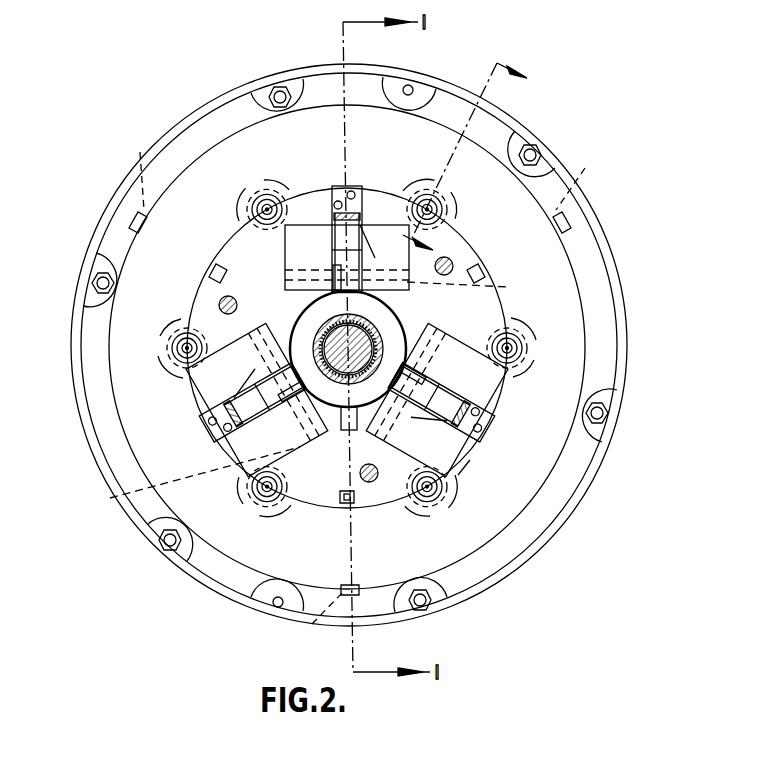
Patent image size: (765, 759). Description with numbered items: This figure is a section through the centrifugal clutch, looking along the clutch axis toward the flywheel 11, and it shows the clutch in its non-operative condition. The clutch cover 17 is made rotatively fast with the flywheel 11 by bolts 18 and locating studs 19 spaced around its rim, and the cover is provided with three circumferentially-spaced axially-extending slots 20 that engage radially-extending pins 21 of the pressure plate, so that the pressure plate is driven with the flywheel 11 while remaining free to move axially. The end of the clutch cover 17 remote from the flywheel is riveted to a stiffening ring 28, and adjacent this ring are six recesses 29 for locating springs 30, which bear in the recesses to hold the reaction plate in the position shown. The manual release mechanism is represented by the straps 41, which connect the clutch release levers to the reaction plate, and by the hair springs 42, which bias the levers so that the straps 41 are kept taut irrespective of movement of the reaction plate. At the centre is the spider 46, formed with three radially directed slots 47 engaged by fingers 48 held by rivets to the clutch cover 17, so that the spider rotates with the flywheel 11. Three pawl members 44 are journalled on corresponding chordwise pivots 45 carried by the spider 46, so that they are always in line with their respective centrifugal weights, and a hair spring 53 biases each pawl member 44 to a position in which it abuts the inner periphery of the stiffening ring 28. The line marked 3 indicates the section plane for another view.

The section line 3- 3 is at (475, 162).
The flywheel 11 is at (232, 92).
The clutch cover 17 is at (208, 137).
The bolts 18 is at (279, 92).
The locating studs 19 is at (411, 87).
The axially-extending slots 20 is at (360, 387).
The radially-extending pins 21 is at (138, 213).
The stiffening ring 28 is at (268, 263).
The recesses 29 is at (265, 192).
The springs 30 is at (252, 212).
The straps 41 is at (218, 272).
The hair springs 42 is at (222, 300).
The pawl members 44 is at (490, 476).
The chordwise pivots 45 is at (308, 392).
The spider 46 is at (459, 476).
The radially directed slots 47 is at (331, 209).
The fingers 48 is at (354, 196).
The hair spring 53 is at (485, 394).